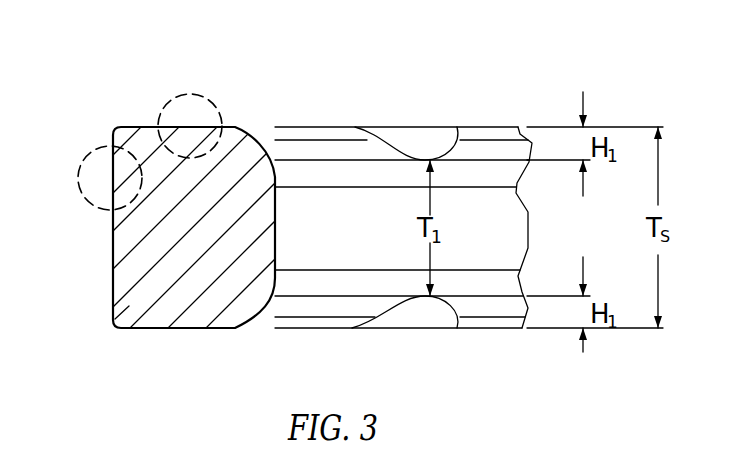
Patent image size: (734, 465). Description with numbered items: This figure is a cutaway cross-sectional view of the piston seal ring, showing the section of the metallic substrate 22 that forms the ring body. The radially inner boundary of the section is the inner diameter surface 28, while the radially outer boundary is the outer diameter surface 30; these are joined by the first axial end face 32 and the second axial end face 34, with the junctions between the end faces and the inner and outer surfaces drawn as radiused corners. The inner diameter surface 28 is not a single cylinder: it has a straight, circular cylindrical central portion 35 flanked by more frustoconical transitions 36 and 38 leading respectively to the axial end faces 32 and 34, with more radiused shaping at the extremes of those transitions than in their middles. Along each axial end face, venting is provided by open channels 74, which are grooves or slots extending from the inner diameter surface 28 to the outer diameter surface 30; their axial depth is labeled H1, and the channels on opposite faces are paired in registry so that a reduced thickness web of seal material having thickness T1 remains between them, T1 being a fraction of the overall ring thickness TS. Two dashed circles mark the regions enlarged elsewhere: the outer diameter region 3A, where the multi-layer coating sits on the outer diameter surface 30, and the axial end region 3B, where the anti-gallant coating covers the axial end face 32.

The metallic substrate 22 is at (110, 321).
The inner diameter surface 28 is at (277, 247).
The outer diameter surface 30 is at (112, 253).
The first axial end face 32 is at (137, 127).
The second axial end face 34 is at (180, 330).
The straight central portion 35 is at (288, 205).
The frustoconical transition 36 is at (274, 141).
The frustoconical transition 38 is at (258, 305).
The open channel 74 is at (404, 130).
The outer diameter region 3A is at (88, 163).
The axial end region 3B is at (200, 95).